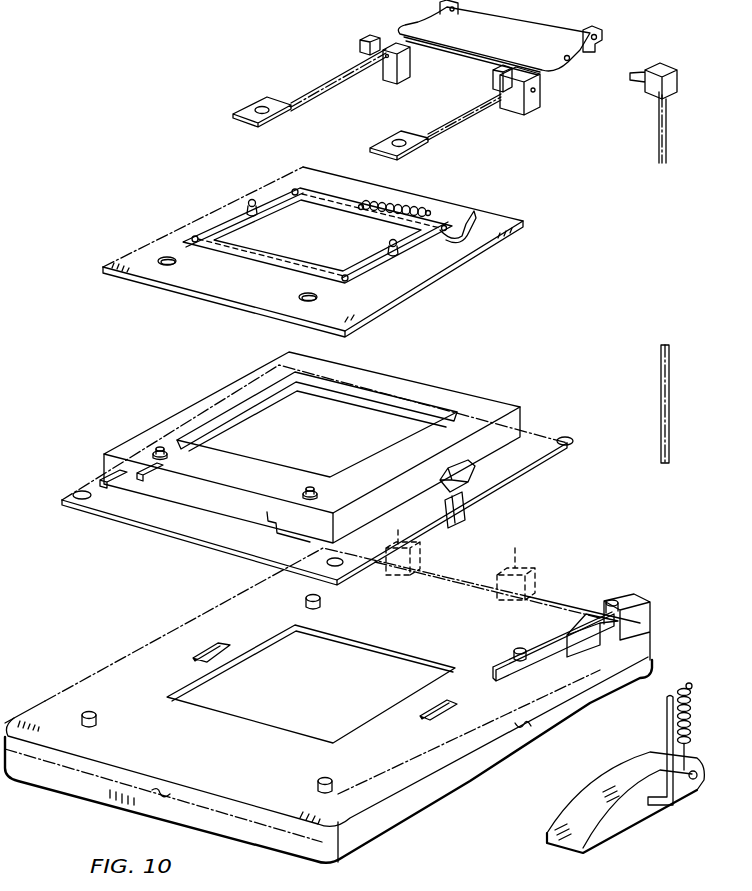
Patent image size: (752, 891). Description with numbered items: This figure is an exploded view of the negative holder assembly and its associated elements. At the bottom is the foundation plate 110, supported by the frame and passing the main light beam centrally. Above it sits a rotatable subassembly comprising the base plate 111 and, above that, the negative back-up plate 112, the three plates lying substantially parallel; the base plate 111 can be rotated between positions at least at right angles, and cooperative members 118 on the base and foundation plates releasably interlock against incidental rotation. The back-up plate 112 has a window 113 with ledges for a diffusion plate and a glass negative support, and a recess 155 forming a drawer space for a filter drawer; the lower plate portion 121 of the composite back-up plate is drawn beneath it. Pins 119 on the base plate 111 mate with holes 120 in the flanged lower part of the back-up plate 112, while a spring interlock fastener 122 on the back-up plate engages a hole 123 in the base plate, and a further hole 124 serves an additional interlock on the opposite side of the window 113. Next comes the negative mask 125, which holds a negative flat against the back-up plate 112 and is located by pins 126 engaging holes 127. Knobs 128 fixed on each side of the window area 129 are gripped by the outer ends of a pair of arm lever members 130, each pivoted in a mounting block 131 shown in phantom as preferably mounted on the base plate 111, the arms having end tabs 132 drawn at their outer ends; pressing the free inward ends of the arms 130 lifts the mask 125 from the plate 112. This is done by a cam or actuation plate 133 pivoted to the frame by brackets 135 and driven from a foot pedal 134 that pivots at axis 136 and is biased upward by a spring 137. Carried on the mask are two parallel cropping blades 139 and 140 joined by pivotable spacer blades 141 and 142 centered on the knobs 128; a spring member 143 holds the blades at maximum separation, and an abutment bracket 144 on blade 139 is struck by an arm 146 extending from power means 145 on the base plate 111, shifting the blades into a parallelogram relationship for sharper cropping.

The foundation plate 110 is at (428, 797).
The base plate 111 is at (225, 755).
The negative back-up plate 112 is at (229, 478).
The window 113 is at (305, 447).
The cooperative members 118 is at (160, 793).
The posts or pins 119 is at (320, 601).
The holes 120 is at (74, 494).
The mounting plate 121 is at (143, 512).
The spring interlock fastener 122 is at (455, 522).
The hole 123 is at (445, 715).
The hole 124 is at (198, 657).
The negative mask 125 is at (414, 282).
The pins 126 is at (158, 446).
The holes 127 is at (160, 266).
The knobs 128 is at (247, 208).
The window area 129 is at (314, 248).
The arm lever members 130 is at (317, 80).
The mounting block 131 is at (405, 70).
The end tabs 132 is at (248, 108).
The cam or actuation plate 133 is at (536, 55).
The foot pedal 134 is at (614, 828).
The brackets 135 is at (456, 16).
The axis 136 is at (667, 415).
The spring 137 is at (691, 720).
The cropping blade 139 is at (323, 200).
The cropping blade 140 is at (253, 258).
The spacer blade 141 is at (203, 228).
The spacer blade 142 is at (386, 264).
The spring member 143 is at (413, 200).
The abutment member or upstanding bracket 144 is at (470, 222).
The power means 145 is at (633, 624).
The arm 146 is at (553, 648).
The recess 155 is at (220, 513).